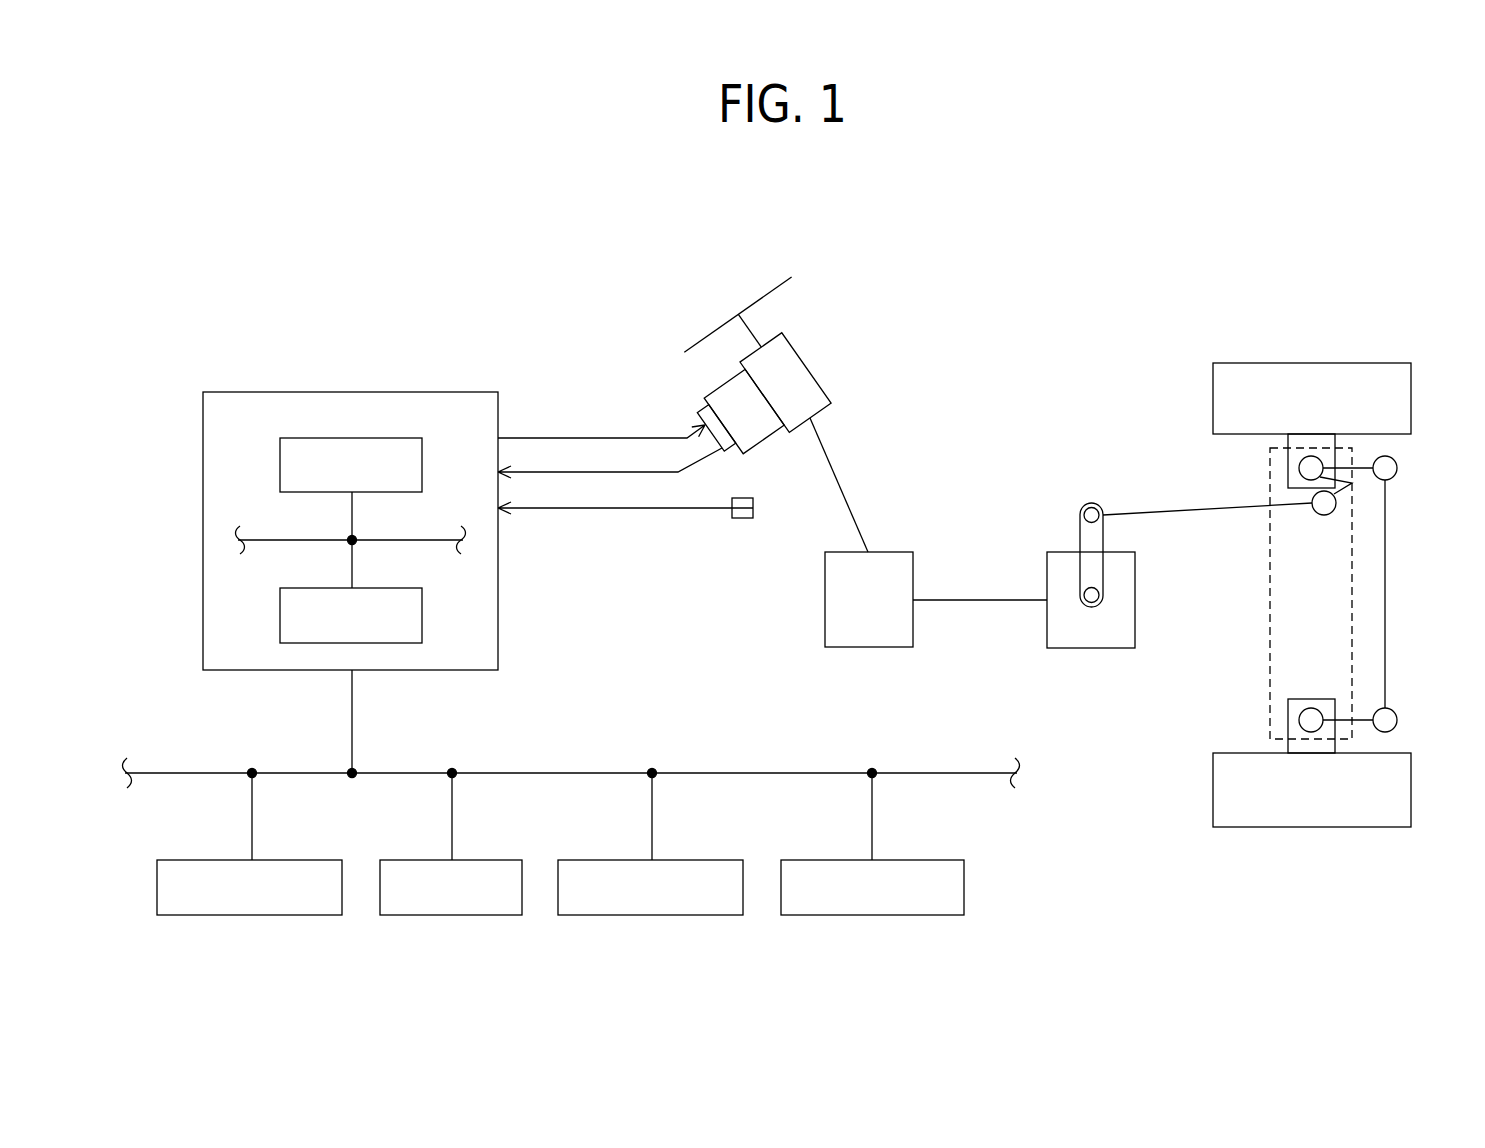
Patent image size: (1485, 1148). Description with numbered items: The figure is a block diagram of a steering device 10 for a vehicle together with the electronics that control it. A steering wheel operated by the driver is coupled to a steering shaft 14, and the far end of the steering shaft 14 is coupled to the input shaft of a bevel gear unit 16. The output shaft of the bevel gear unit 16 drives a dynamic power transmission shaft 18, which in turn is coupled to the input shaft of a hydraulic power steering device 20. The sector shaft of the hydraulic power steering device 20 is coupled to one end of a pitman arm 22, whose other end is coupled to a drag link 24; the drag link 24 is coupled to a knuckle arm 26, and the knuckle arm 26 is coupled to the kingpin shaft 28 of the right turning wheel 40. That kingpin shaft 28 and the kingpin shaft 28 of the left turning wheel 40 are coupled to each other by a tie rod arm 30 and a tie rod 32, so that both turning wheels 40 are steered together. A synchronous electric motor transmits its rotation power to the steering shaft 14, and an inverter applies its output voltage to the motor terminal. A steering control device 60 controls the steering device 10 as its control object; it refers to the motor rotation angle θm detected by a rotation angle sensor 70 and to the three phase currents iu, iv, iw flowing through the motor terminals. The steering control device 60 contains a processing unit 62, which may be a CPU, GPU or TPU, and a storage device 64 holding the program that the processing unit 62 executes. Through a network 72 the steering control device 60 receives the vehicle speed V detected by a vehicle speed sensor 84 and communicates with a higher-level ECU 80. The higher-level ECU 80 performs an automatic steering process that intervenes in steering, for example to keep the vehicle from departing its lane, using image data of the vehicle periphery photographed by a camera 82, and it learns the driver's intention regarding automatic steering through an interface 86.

The steering device 10 is at (1032, 310).
The steering shaft 14 is at (845, 482).
The bevel gear unit 16 is at (825, 597).
The dynamic power transmission shaft 18 is at (972, 602).
The hydraulic power steering device 20 is at (1135, 598).
The pitman arm 22 is at (1078, 518).
The drag link 24 is at (1173, 507).
The knuckle arm 26 is at (1348, 490).
The kingpin shaft 28 is at (1288, 467).
The tie rod arm 30 is at (1367, 465).
The tie rod 32 is at (1387, 592).
The turning wheel 40 is at (1367, 362).
The steering control device 60 is at (435, 392).
The processing unit 62 is at (380, 438).
The storage device 64 is at (383, 588).
The rotation angle sensor 70 is at (740, 520).
The network 72 is at (354, 722).
The higher-level ECU 80 is at (282, 858).
The camera 82 is at (482, 858).
The vehicle speed sensor 84 is at (682, 858).
The interface 86 is at (915, 858).